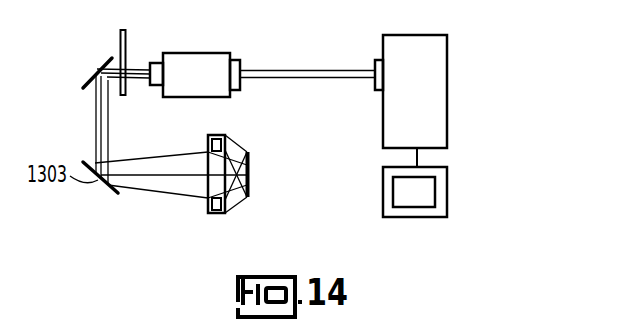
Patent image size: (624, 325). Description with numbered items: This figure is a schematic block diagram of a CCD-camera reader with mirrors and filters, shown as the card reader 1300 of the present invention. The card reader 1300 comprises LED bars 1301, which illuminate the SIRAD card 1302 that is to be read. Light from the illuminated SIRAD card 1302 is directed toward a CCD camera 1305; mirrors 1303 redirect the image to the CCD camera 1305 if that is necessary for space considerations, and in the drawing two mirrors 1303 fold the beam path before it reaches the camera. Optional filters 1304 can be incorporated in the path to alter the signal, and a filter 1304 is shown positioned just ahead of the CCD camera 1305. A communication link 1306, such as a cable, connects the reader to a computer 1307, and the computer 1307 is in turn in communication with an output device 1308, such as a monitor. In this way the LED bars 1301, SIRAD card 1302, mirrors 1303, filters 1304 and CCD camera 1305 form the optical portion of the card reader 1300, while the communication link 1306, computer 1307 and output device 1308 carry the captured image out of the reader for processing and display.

The card reader 1300 is at (477, 132).
The LED bars 1301 is at (218, 213).
The SIRAD card 1302 is at (252, 178).
The mirrors 1303 is at (100, 70).
The filters 1304 is at (127, 43).
The CCD camera 1305 is at (200, 53).
The communication link 1306 is at (293, 70).
The computer 1307 is at (447, 48).
The output device 1308 is at (447, 177).